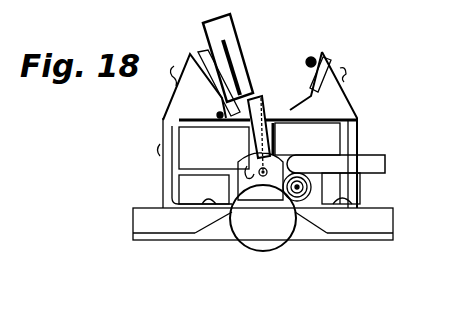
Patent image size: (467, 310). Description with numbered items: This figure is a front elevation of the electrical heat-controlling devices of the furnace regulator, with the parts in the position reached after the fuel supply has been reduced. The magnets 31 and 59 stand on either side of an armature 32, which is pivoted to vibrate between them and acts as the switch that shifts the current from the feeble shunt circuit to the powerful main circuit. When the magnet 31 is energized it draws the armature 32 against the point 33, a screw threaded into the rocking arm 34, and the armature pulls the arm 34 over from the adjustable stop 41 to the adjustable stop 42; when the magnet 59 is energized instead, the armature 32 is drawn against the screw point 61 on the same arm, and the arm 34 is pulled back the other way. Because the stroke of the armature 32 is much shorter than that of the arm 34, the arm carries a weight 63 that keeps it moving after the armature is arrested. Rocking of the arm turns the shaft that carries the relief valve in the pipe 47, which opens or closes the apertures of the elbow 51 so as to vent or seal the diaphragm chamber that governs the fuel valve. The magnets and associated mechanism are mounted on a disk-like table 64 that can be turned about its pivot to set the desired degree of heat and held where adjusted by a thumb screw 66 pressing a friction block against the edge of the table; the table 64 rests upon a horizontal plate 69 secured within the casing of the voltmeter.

The magnet 31 is at (214, 162).
The armature 32 is at (260, 176).
The point 33 is at (217, 115).
The rocking arm 34 is at (266, 121).
The adjustable stop 41 is at (306, 60).
The adjustable stop 42 is at (171, 63).
The pipe 47 is at (311, 198).
The elbow 51 is at (336, 167).
The magnet 59 is at (306, 141).
The screw point 61 is at (268, 103).
The weight 63 is at (234, 32).
The table 64 is at (394, 215).
The thumb screw 66 is at (263, 218).
The horizontal plate 69 is at (362, 235).